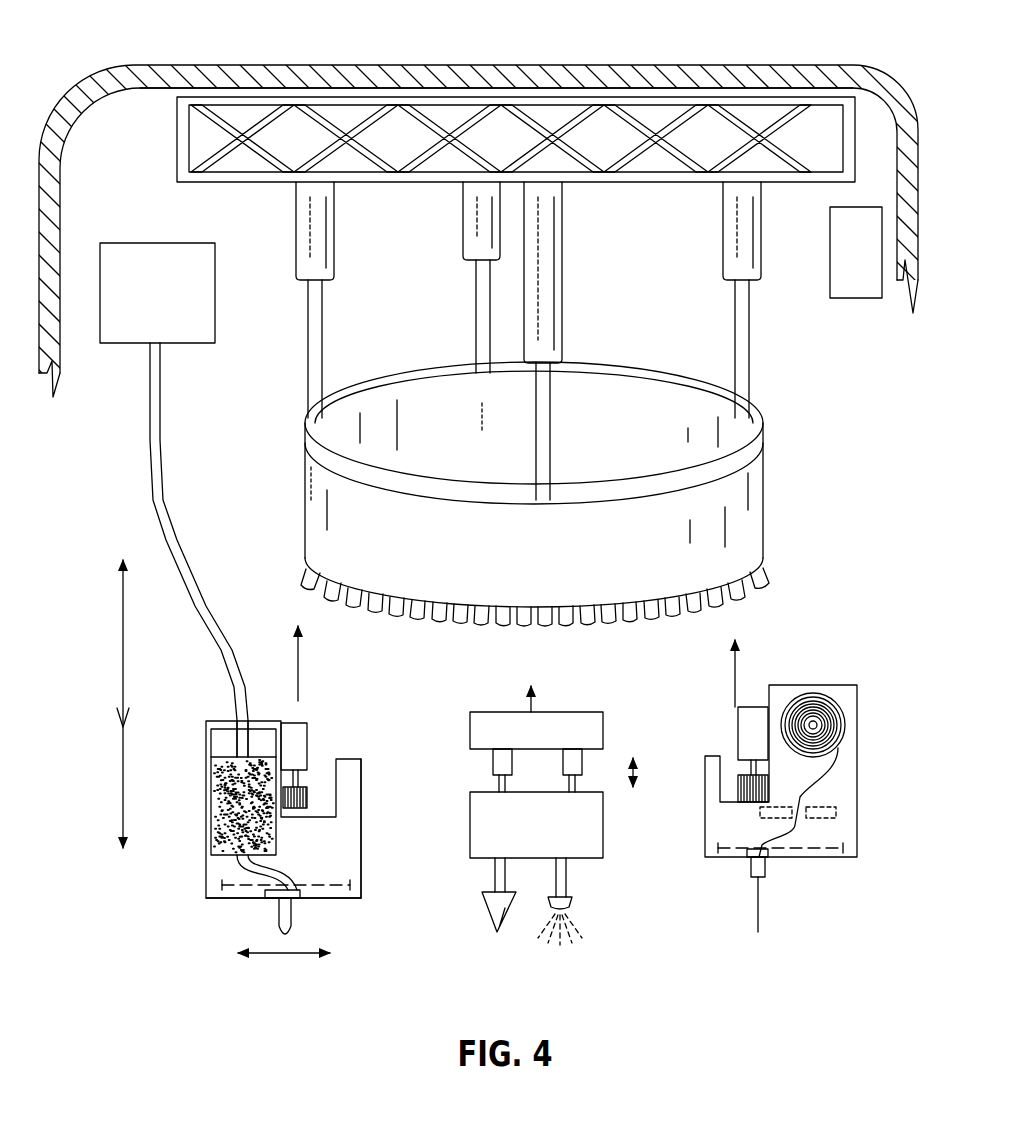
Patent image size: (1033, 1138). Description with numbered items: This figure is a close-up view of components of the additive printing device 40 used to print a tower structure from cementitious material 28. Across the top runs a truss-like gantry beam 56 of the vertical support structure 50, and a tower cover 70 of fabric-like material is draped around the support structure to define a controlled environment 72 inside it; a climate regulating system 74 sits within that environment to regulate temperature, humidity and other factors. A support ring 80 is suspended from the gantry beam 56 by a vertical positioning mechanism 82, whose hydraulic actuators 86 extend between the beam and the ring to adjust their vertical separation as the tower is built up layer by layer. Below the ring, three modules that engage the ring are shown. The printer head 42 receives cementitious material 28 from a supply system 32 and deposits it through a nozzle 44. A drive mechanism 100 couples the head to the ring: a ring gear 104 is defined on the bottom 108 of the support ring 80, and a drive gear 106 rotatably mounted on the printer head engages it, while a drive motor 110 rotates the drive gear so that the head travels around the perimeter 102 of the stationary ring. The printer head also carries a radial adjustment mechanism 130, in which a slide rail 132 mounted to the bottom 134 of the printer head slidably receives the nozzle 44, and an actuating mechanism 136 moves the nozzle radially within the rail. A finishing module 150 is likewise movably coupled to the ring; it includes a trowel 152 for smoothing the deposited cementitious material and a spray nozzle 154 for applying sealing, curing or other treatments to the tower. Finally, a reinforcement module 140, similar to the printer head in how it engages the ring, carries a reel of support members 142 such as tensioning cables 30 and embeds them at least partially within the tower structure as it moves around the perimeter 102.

The cementitious material 28 is at (230, 810).
The tensioning cables 30 is at (762, 916).
The supply system 32 is at (145, 313).
The additive printing device 40 is at (216, 39).
The printer head 42 is at (200, 862).
The nozzle 44 is at (271, 923).
The vertical support structure 50 is at (806, 94).
The gantry beam 56 is at (540, 108).
The tower cover 70 is at (732, 72).
The controlled environment 72 is at (129, 205).
The climate regulating system 74 is at (844, 267).
The support ring 80 is at (528, 564).
The vertical positioning mechanism 82 is at (719, 259).
The hydraulic actuators 86 is at (329, 250).
The drive mechanism 100 is at (284, 691).
The perimeter 102 is at (309, 567).
The ring gear 104 is at (432, 623).
The drive gear 106 is at (309, 792).
The bottom 108 is at (471, 626).
The drive motor 110 is at (300, 740).
The radial adjustment mechanism 130 is at (322, 883).
The slide rail 132 is at (334, 903).
The bottom 134 is at (216, 903).
The actuating mechanism 136 is at (292, 888).
The reinforcement module 140 is at (862, 768).
The support members 142 is at (751, 908).
The finishing module 150 is at (521, 836).
The trowel 152 is at (497, 933).
The spray nozzle 154 is at (575, 902).